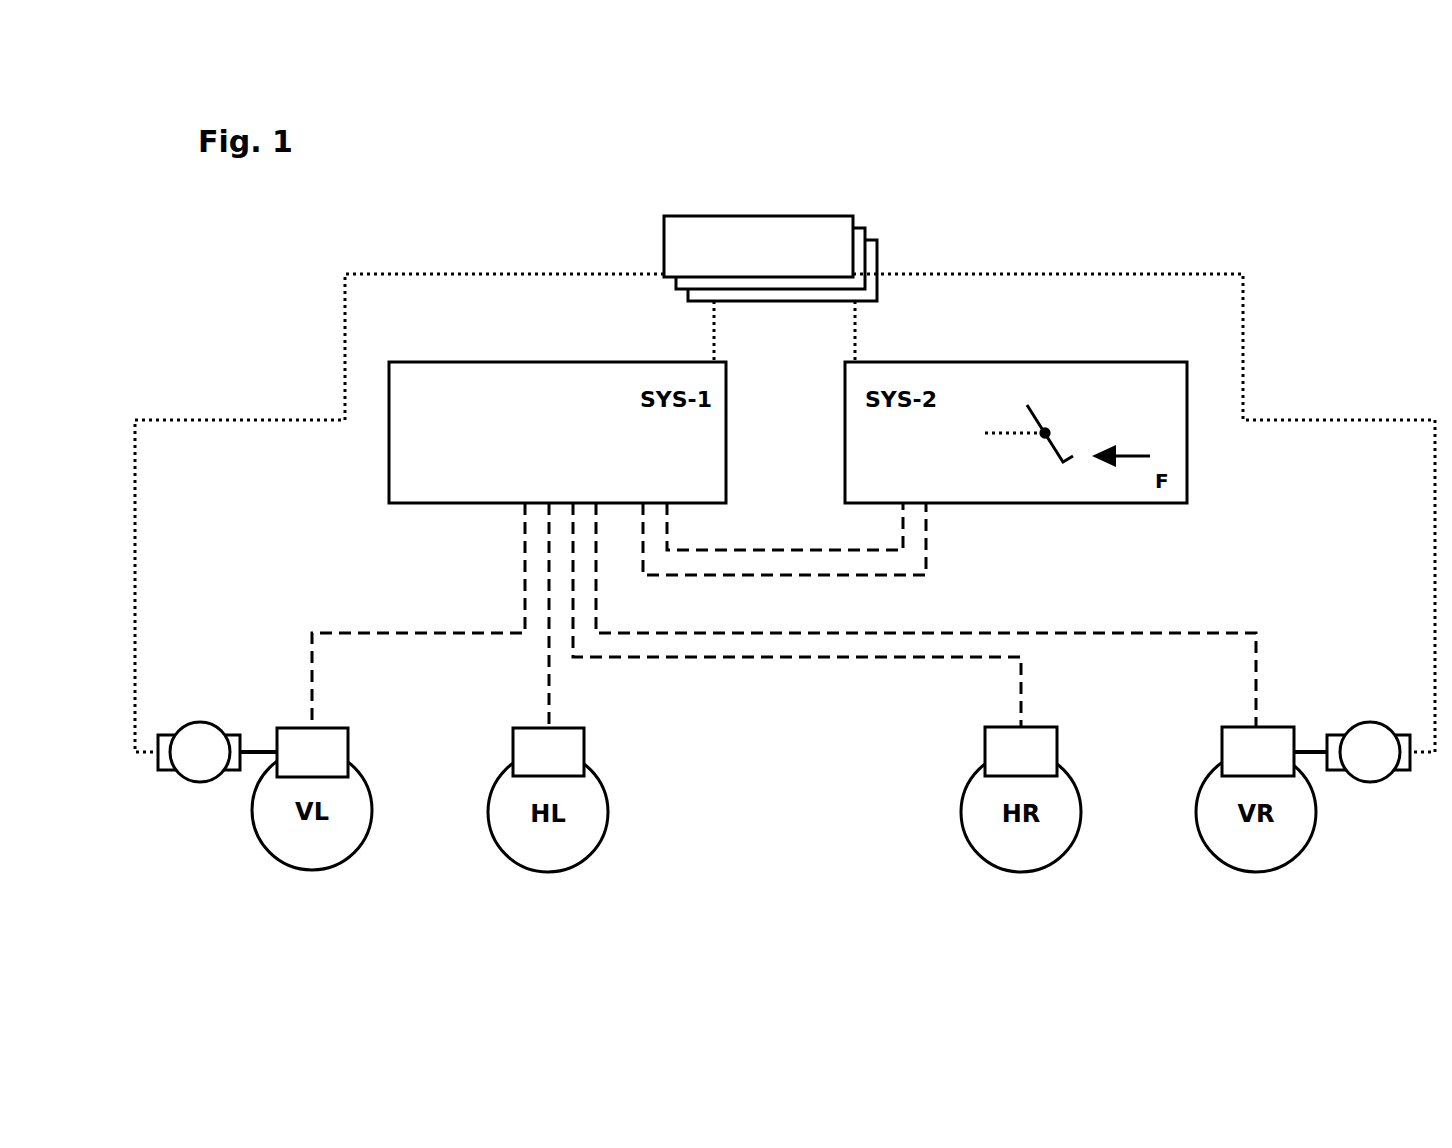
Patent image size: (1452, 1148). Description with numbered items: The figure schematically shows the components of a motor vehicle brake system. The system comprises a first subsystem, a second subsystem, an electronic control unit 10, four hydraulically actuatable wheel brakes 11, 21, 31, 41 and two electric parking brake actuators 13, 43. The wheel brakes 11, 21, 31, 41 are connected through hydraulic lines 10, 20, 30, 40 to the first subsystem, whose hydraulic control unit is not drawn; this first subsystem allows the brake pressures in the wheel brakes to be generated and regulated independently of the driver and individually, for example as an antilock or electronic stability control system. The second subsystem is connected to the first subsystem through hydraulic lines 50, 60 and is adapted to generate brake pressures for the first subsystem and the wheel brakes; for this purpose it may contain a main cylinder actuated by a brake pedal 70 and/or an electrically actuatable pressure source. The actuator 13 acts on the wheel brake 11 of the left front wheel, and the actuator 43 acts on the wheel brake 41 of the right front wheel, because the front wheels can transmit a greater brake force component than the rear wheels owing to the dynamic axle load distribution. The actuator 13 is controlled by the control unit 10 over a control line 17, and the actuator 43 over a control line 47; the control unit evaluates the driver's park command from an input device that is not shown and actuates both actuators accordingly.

The electronic control unit 10 is at (360, 670).
The wheel brake 11 is at (276, 727).
The EPB actuator 13 is at (170, 727).
The control line 17 is at (193, 420).
The hydraulic line 20 is at (543, 692).
The wheel brake 21 is at (512, 728).
The hydraulic line 30 is at (1023, 692).
The wheel brake 31 is at (1056, 727).
The hydraulic line 40 is at (1228, 635).
The wheel brake 41 is at (1292, 727).
The EPB actuator 43 is at (1398, 727).
The control line 47 is at (1375, 420).
The hydraulic line 50 is at (763, 550).
The hydraulic line 60 is at (927, 550).
The brake pedal 70 is at (1052, 443).